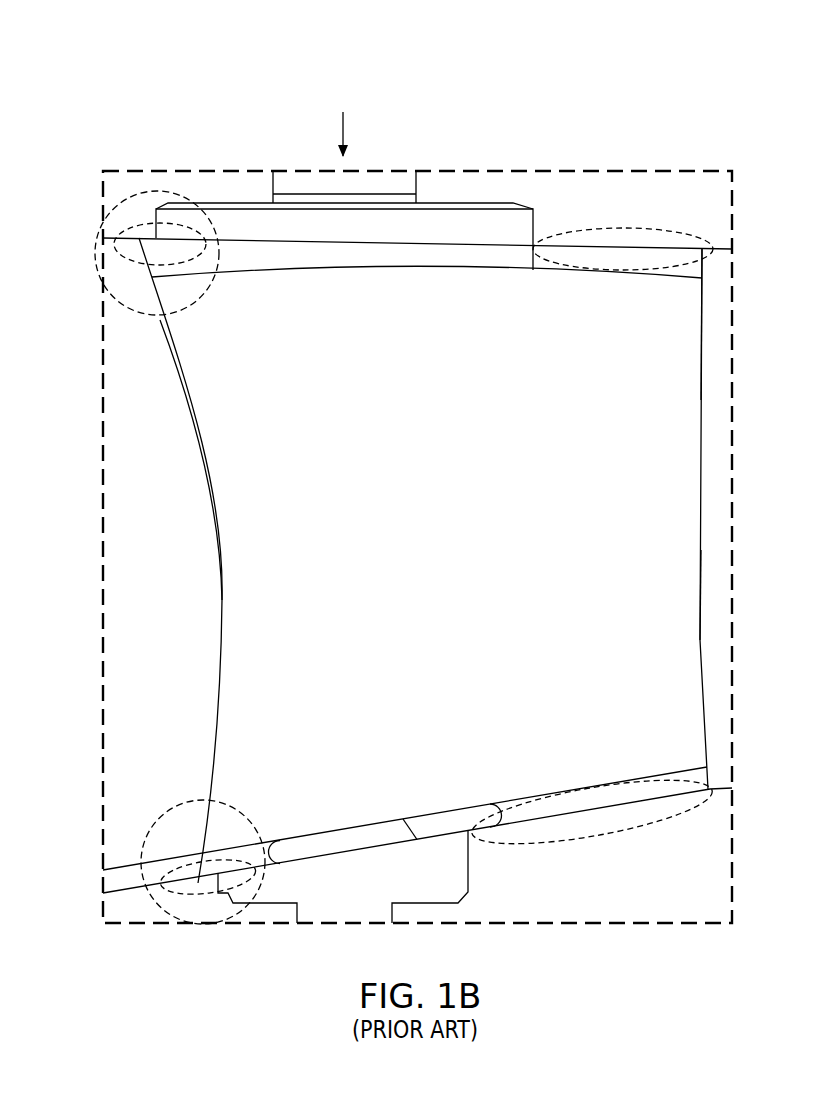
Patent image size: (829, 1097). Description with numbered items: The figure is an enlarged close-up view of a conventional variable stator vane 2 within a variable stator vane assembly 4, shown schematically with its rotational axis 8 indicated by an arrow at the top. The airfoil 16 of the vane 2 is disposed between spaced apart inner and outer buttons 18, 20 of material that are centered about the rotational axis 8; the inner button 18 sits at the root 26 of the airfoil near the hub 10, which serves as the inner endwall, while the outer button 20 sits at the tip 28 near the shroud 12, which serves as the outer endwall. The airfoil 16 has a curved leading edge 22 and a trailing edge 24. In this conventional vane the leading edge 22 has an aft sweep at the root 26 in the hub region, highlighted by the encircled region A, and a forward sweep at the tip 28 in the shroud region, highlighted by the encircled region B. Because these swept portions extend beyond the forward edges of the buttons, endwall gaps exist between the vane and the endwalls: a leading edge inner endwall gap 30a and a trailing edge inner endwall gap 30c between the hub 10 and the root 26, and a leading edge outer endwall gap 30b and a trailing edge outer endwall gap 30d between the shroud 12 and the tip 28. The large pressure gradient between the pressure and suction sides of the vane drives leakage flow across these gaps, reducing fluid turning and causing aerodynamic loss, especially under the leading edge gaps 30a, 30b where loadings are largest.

The variable stator vane 2 is at (709, 450).
The variable stator vane assembly 4 is at (414, 114).
The rotational axis 8 is at (343, 114).
The hub 10 is at (120, 893).
The shroud 12 is at (148, 240).
The airfoil 16 is at (702, 335).
The inner button 18 is at (330, 904).
The outer button 20 is at (220, 201).
The leading edge 22 is at (218, 710).
The trailing edge 24 is at (702, 698).
The root 26 is at (345, 834).
The tip 28 is at (528, 278).
The leading edge inner endwall gap 30a is at (197, 897).
The leading edge outer endwall gap 30b is at (127, 263).
The trailing edge inner endwall gap 30c is at (641, 824).
The trailing edge outer endwall gap 30d is at (618, 226).
The leading edge aft sweep region A is at (202, 848).
The leading edge forward sweep region B is at (147, 284).